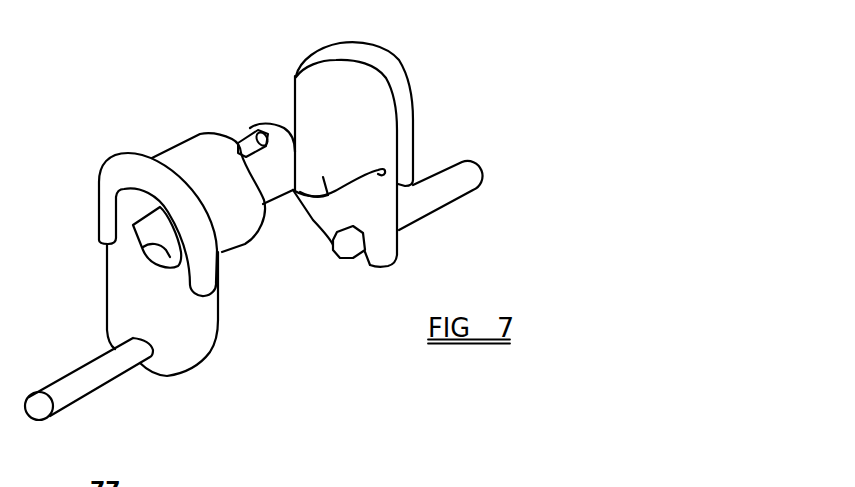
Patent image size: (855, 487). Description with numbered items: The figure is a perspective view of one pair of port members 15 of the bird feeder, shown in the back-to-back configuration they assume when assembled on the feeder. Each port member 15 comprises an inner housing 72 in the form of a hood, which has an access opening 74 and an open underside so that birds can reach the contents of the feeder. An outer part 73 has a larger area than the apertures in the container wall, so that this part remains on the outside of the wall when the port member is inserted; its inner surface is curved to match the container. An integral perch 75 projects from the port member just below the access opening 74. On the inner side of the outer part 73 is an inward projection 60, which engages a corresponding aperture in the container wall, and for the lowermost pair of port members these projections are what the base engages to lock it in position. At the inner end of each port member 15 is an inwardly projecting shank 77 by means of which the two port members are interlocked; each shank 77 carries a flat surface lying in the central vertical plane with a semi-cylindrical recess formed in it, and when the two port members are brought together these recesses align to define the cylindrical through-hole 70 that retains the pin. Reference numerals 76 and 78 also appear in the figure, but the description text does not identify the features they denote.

The port member 15 is at (262, 80).
The inward projection 60 is at (345, 255).
The through-hole 70 is at (250, 128).
The inner housing 72 is at (246, 240).
The outer part 73 is at (218, 296).
The access opening 74 is at (140, 204).
The perch 75 is at (97, 384).
The notch 76 is at (322, 220).
The shank 77 is at (277, 188).
The opening 78 is at (143, 247).